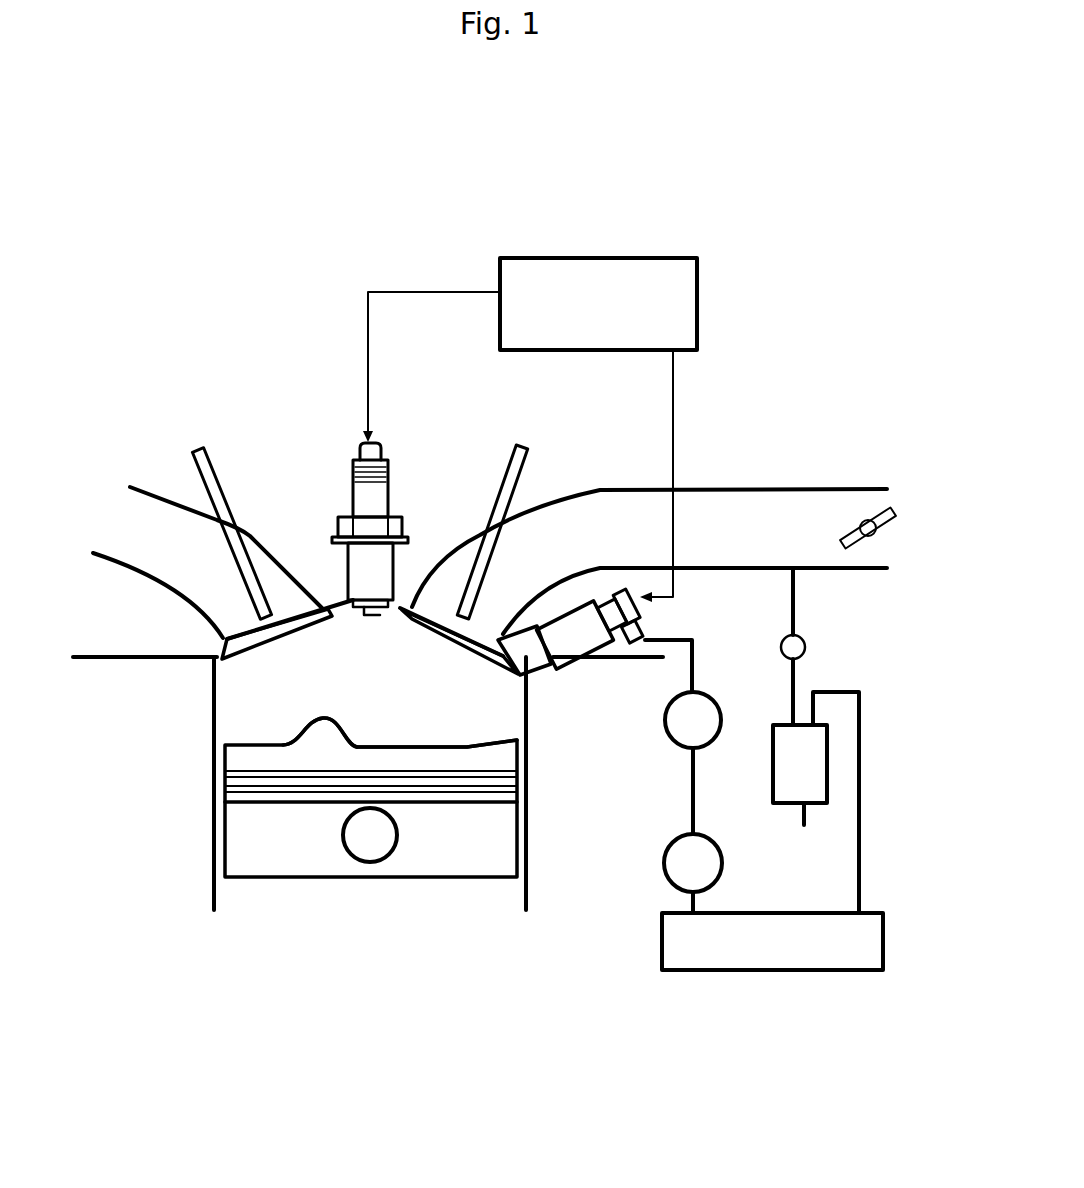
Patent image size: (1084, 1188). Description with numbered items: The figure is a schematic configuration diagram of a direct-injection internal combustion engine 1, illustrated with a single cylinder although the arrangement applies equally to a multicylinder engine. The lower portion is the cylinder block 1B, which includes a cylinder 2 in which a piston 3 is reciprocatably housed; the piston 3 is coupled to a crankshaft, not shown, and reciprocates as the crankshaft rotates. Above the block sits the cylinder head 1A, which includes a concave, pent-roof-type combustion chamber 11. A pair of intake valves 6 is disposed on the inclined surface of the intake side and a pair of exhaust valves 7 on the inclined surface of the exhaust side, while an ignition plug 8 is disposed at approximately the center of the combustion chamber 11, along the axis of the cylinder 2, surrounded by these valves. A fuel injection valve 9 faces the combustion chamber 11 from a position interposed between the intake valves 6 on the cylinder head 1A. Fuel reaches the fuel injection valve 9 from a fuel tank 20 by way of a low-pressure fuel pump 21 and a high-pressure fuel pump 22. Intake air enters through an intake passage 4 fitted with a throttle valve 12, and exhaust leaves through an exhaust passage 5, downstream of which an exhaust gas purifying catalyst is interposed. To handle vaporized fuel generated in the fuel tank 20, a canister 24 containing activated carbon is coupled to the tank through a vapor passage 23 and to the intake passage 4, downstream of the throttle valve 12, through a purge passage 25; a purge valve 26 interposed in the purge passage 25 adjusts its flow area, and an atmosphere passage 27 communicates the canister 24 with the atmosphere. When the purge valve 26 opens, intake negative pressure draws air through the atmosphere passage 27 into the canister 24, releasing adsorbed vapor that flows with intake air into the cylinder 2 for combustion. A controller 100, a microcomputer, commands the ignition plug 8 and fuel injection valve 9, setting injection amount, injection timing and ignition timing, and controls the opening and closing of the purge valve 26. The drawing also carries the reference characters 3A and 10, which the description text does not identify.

The direct-injection internal combustion engine 1 is at (183, 408).
The cylinder head 1A is at (80, 614).
The cylinder block 1B is at (80, 724).
The cylinder 2 is at (212, 835).
The piston 3 is at (418, 858).
The piston crown 3A is at (467, 749).
The intake passage 4 is at (570, 503).
The exhaust passage 5 is at (160, 493).
The intake valves 6 is at (507, 467).
The exhaust valves 7 is at (210, 455).
The ignition plug 8 is at (348, 495).
The fuel injection valve 9 is at (562, 647).
The combustion chamber 10 is at (355, 745).
The combustion chamber 11 is at (347, 605).
The throttle valve 12 is at (863, 522).
The fuel tank 20 is at (732, 962).
The low-pressure fuel pump 21 is at (662, 862).
The high-pressure fuel pump 22 is at (665, 728).
The vapor passage 23 is at (862, 807).
The canister 24 is at (822, 745).
The purge passage 25 is at (797, 677).
The purge valve 26 is at (797, 643).
The atmosphere passage 27 is at (805, 825).
The controller 100 is at (527, 273).